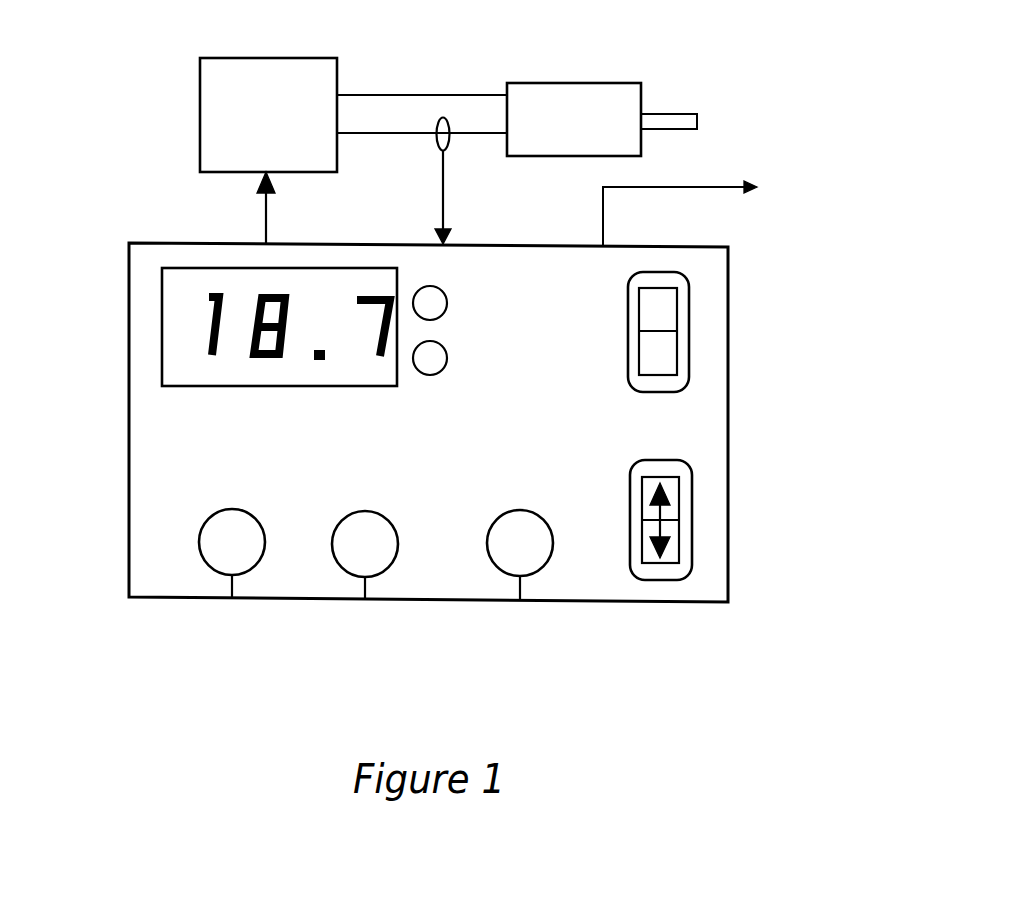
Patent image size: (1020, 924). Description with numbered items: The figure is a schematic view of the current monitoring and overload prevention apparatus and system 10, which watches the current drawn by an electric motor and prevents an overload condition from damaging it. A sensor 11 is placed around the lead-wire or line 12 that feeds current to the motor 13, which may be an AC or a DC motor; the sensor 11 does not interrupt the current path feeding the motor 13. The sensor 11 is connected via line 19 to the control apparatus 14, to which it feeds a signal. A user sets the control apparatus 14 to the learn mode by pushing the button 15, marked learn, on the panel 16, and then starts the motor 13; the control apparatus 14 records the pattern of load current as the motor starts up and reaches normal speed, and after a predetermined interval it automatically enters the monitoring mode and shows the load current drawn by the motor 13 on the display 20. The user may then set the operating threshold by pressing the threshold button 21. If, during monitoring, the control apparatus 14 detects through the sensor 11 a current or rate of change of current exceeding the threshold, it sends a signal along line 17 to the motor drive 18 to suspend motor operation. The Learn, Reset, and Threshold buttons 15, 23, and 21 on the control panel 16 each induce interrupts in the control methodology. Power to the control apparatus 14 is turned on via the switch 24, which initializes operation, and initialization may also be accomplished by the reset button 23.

The current monitoring and overload prevention apparatus and system 10 is at (786, 141).
The sensor 11 is at (437, 140).
The lead-wire or line 12 is at (383, 133).
The motor 13 is at (641, 97).
The control apparatus 14 is at (730, 498).
The learn button 15 is at (230, 597).
The control panel 16 is at (313, 573).
The line 17 is at (260, 197).
The motor drive 18 is at (337, 70).
The line 19 is at (445, 201).
The display 20 is at (172, 308).
The threshold button 21 is at (520, 600).
The reset button 23 is at (377, 598).
The switch 24 is at (662, 353).